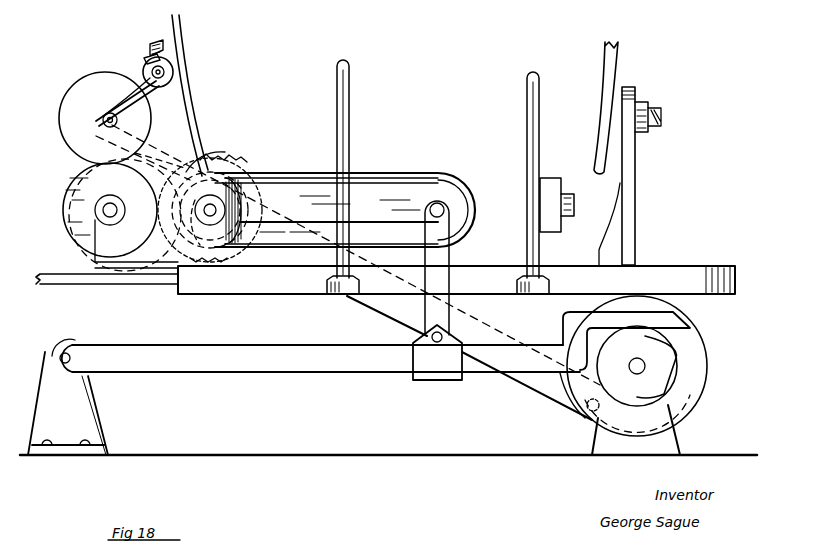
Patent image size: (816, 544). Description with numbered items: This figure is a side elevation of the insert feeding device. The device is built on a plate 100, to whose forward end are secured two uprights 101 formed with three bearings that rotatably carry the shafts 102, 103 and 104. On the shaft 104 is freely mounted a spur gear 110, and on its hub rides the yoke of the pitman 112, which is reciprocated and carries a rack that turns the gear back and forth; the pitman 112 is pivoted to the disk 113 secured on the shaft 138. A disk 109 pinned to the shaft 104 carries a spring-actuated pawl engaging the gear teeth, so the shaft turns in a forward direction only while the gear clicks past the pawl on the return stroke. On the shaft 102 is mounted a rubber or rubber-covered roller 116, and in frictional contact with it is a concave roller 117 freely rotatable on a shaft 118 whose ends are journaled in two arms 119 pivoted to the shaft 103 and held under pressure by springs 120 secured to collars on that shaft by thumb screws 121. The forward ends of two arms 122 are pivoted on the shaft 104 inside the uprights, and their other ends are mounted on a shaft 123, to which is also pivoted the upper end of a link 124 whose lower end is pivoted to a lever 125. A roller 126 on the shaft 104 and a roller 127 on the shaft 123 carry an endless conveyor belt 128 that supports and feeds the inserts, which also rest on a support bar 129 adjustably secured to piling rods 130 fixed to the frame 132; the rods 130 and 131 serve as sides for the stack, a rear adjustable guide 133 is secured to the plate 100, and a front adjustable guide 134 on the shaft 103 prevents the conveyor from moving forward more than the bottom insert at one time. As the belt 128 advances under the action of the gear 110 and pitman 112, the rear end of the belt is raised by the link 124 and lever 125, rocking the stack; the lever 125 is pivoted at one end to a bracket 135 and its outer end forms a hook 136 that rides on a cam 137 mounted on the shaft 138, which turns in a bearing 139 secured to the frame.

The plate 100 is at (142, 284).
The uprights 101 is at (173, 126).
The shaft 102 is at (108, 211).
The shaft 103 is at (170, 70).
The shaft 104 is at (214, 208).
The disk 109 is at (210, 158).
The spur gear 110 is at (218, 158).
The pitman 112 is at (368, 292).
The disk 113 is at (692, 396).
The roller 116 is at (86, 184).
The concave roller 117 is at (80, 98).
The shaft 118 is at (113, 172).
The arms 119 is at (130, 100).
The springs 120 is at (106, 115).
The thumb screws 121 is at (149, 42).
The arms 122 is at (384, 204).
The shaft 123 is at (440, 204).
The link 124 is at (446, 262).
The lever 125 is at (323, 373).
The roller 126 is at (236, 176).
The roller 127 is at (460, 196).
The endless conveyor belt 128 is at (366, 170).
The support bar 129 is at (548, 178).
The piling rods 130 is at (526, 86).
The rods 131 is at (340, 84).
The frame 132 is at (502, 292).
The rear adjustable guide 133 is at (612, 60).
The front adjustable guide 134 is at (183, 26).
The bracket 135 is at (82, 412).
The hook 136 is at (668, 320).
The cam 137 is at (666, 356).
The shaft 138 is at (644, 366).
The bearing 139 is at (662, 436).